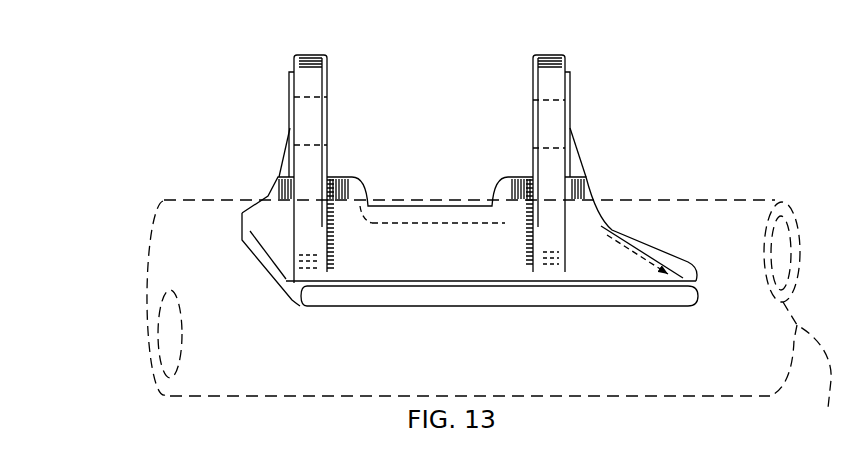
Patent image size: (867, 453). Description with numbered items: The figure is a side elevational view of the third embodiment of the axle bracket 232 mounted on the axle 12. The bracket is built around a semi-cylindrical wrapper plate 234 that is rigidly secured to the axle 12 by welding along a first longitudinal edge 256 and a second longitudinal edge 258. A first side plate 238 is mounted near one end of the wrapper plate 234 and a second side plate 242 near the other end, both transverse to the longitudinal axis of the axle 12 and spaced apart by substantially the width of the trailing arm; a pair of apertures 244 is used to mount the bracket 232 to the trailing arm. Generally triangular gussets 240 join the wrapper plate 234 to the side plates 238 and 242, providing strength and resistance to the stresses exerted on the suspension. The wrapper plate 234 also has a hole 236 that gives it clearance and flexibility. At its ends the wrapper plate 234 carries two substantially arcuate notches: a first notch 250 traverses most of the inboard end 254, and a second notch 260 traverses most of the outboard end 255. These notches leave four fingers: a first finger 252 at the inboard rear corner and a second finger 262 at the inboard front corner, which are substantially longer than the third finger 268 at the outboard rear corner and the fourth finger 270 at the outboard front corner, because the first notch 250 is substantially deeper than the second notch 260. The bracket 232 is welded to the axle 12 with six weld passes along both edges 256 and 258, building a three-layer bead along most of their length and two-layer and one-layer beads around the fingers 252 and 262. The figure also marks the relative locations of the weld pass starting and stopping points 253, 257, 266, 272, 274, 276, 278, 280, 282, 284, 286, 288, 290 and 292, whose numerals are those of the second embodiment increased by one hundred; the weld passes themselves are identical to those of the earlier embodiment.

The axle 12 is at (490, 316).
The axle bracket 232 is at (700, 147).
The wrapper plate 234 is at (345, 178).
The hole 236 is at (431, 203).
The first side plate 238 is at (555, 73).
The gussets 240 is at (282, 160).
The second side plate 242 is at (309, 82).
The apertures 244 is at (312, 120).
The first notch 250 is at (582, 173).
The first finger 252 is at (700, 281).
The weld starting and stopping point 253 is at (244, 242).
The inboard end 254 is at (693, 191).
The outboard end 255 is at (215, 213).
The first longitudinal edge 256 is at (302, 307).
The weld starting and stopping point 257 is at (268, 275).
The second longitudinal edge 258 is at (325, 305).
The second notch 260 is at (262, 195).
The second finger 262 is at (688, 296).
The weld starting and stopping point 266 is at (239, 262).
The third finger 268 is at (493, 307).
The fourth finger 270 is at (702, 265).
The weld starting and stopping point 272 is at (405, 308).
The weld starting and stopping point 274 is at (637, 308).
The weld starting and stopping point 276 is at (451, 308).
The weld starting and stopping point 278 is at (590, 308).
The weld starting and stopping point 280 is at (241, 248).
The weld starting and stopping point 282 is at (397, 275).
The weld starting and stopping point 284 is at (684, 251).
The weld starting and stopping point 286 is at (492, 276).
The weld starting and stopping point 288 is at (633, 275).
The weld starting and stopping point 290 is at (445, 276).
The weld starting and stopping point 292 is at (592, 276).